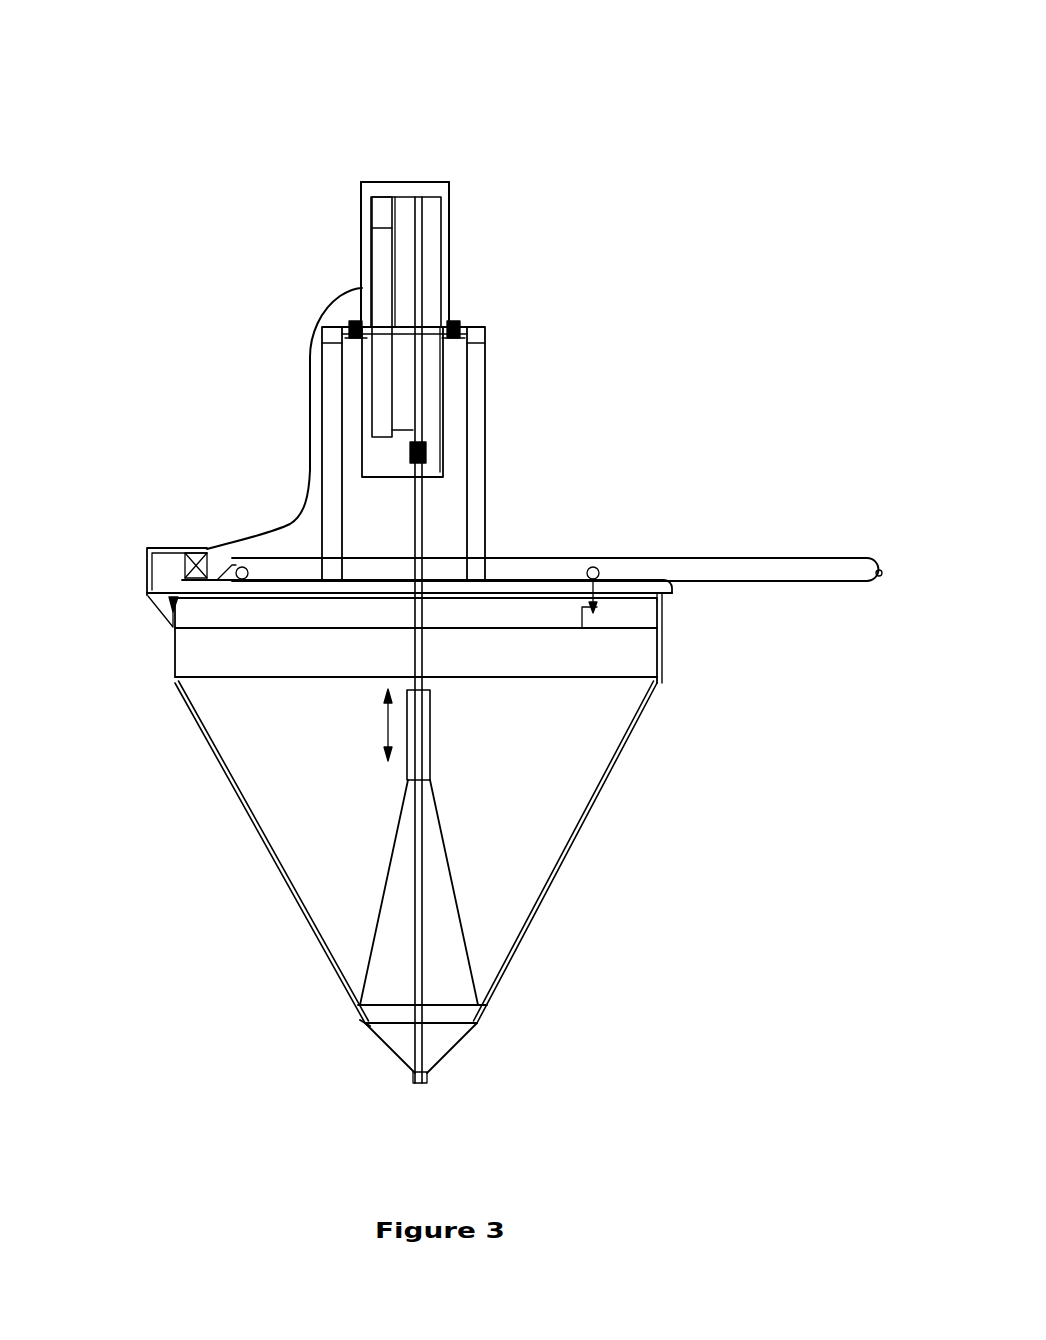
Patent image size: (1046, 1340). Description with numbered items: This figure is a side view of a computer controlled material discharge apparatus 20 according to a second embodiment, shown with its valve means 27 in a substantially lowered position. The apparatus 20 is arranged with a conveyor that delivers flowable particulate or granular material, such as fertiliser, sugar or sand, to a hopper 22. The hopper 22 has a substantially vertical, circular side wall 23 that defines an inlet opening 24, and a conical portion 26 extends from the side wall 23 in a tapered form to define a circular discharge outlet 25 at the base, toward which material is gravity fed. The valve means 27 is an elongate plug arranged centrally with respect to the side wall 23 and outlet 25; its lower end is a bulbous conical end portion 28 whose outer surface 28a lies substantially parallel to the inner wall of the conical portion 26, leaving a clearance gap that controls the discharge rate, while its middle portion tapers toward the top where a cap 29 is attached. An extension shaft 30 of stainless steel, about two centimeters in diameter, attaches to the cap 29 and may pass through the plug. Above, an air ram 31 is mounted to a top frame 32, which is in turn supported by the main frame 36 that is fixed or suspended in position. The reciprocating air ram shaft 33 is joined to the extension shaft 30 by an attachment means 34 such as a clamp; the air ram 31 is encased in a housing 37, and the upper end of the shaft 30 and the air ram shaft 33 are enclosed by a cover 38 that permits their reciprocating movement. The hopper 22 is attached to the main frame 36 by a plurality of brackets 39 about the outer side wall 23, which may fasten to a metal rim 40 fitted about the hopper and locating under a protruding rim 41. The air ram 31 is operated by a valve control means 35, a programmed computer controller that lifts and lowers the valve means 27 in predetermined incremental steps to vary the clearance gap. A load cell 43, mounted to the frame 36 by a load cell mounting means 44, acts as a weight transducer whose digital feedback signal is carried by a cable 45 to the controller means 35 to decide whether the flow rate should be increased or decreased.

The material discharge apparatus 20 is at (617, 88).
The hopper 22 is at (720, 956).
The side wall 23 is at (661, 650).
The inlet opening 24 is at (629, 592).
The discharge outlet 25 is at (366, 1026).
The conical portion 26 is at (622, 755).
The valve means 27 is at (393, 927).
The conical end portion 28 is at (437, 1040).
The outer surface 28a is at (482, 1020).
The cap 29 is at (428, 759).
The extension shaft 30 is at (424, 518).
The air ram 31 is at (432, 254).
The top frame 32 is at (474, 366).
The air ram shaft 33 is at (422, 354).
The attachment means 34 is at (426, 446).
The valve control means 35 is at (377, 257).
The main frame 36 is at (775, 567).
The housing 37 is at (378, 181).
The cover 38 is at (355, 431).
The brackets 39 is at (601, 566).
The metal rim 40 is at (202, 612).
The protruding rim 41 is at (670, 597).
The load cell 43 is at (195, 553).
The load cell mounting means 44 is at (184, 553).
The cable 45 is at (300, 345).